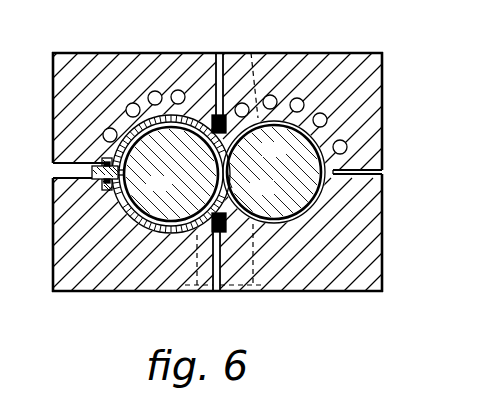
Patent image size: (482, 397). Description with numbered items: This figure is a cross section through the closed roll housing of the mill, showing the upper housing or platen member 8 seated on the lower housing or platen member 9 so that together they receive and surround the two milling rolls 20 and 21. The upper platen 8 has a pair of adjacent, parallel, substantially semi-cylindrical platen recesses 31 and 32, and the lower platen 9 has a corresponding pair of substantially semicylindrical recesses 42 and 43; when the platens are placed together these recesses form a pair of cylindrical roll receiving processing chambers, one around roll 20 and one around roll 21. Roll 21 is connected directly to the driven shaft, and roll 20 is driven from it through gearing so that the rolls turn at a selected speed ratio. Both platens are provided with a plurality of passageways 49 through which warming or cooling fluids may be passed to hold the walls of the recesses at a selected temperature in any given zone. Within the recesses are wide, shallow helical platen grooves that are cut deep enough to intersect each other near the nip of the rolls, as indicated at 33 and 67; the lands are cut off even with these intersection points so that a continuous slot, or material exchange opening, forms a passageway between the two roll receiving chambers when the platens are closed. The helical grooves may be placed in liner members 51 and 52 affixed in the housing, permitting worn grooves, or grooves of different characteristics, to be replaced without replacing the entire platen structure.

The upper housing member 8 is at (333, 52).
The lower housing member 9 is at (339, 294).
The milling roll 20 is at (188, 192).
The milling roll 21 is at (301, 152).
The platen recess 31 is at (164, 108).
The platen recess 32 is at (251, 53).
The groove intersection point 33 is at (215, 181).
The semicylindrical recess 42 is at (160, 238).
The semicylindrical recess 43 is at (258, 226).
The passageway 49 is at (347, 142).
The liner member 51 is at (128, 216).
The liner member 52 is at (140, 107).
The groove intersection point 67 is at (233, 178).